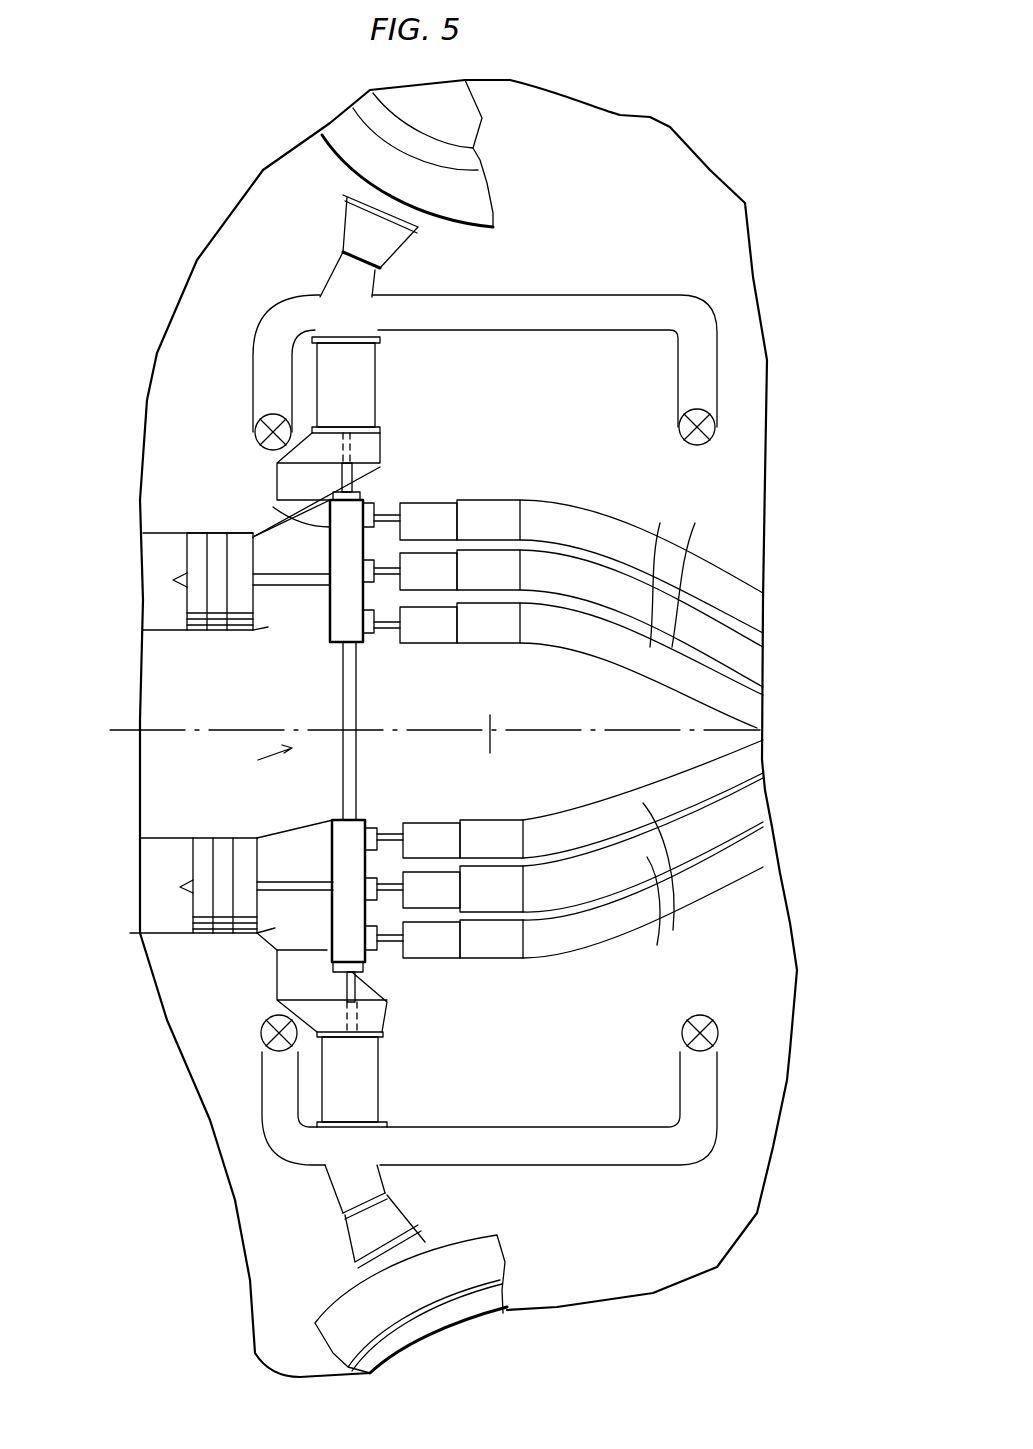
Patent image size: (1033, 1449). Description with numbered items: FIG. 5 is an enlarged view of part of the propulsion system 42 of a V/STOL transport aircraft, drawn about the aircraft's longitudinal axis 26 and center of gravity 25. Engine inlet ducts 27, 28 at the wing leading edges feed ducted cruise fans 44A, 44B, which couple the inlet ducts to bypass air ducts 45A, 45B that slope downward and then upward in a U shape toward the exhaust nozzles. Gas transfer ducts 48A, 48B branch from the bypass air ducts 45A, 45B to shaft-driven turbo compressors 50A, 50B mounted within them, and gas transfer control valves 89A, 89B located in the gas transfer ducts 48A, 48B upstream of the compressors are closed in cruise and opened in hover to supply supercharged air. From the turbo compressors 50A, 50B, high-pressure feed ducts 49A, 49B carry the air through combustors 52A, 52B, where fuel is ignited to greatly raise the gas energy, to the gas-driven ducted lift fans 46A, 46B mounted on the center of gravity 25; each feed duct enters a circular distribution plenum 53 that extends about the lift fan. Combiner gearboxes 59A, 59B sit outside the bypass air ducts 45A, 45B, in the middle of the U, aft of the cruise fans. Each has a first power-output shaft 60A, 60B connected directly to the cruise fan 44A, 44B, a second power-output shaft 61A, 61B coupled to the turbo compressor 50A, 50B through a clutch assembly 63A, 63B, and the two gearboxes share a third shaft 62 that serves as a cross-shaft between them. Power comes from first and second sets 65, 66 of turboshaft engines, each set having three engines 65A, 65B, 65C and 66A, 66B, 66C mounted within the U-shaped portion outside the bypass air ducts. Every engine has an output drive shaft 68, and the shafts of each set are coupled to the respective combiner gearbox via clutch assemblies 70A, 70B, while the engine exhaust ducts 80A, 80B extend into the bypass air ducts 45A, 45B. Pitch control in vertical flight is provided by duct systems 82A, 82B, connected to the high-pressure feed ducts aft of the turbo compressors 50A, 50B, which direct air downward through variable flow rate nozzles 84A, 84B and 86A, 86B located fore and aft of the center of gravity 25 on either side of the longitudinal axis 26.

The center of gravity 25 is at (150, 726).
The longitudinal axis 26 is at (491, 730).
The engine inlet duct 27 is at (143, 534).
The engine inlet duct 28 is at (145, 840).
The propulsion system 42 is at (251, 763).
The ducted cruise fan 44A is at (187, 611).
The ducted cruise fan 44B is at (193, 866).
The bypass air duct 45A is at (262, 628).
The bypass air duct 45B is at (273, 927).
The gas-driven ducted lift fan 46A is at (331, 130).
The gas-driven ducted lift fan 46B is at (512, 1293).
The gas transfer duct 48A is at (382, 437).
The gas transfer duct 48B is at (385, 1030).
The high-pressure feed duct 49A is at (337, 272).
The high-pressure feed duct 49B is at (340, 1204).
The shaft-driven turbo compressor 50A is at (377, 385).
The shaft-driven turbo compressor 50B is at (383, 1112).
The combustor 52A is at (355, 227).
The combustor 52B is at (352, 1250).
The distribution chamber 53 is at (333, 1340).
The combiner gearbox 59A is at (330, 530).
The combiner gearbox 59B is at (335, 848).
The first power-output shaft 60A is at (303, 590).
The first power-output shaft 60B is at (170, 808).
The second power-output shaft 61A is at (277, 465).
The second power-output shaft 61B is at (393, 1030).
The third shaft 62 is at (340, 691).
The clutch assembly 63A is at (355, 488).
The clutch assembly 63B is at (327, 968).
The first set of turboshaft engines 65 is at (489, 490).
The turboshaft engine 65A is at (495, 507).
The turboshaft engine 65B is at (510, 563).
The turboshaft engine 65C is at (497, 633).
The second set of turboshaft engines 66 is at (549, 975).
The turboshaft engine 66A is at (497, 960).
The turboshaft engine 66B is at (477, 837).
The turboshaft engine 66C is at (507, 833).
The output drive shaft 68 is at (387, 650).
The clutch assembly 70A is at (420, 490).
The clutch assembly 70B is at (392, 822).
The exhaust duct 80A is at (686, 545).
The exhaust duct 80B is at (688, 932).
The duct system 82A is at (472, 290).
The duct system 82B is at (411, 1186).
The variable flow rate nozzle 84A is at (255, 433).
The variable flow rate nozzle 84B is at (261, 1035).
The variable flow rate nozzle 86A is at (715, 427).
The variable flow rate nozzle 86B is at (718, 1033).
The gas transfer control valve 89A is at (273, 507).
The gas transfer control valve 89B is at (257, 955).